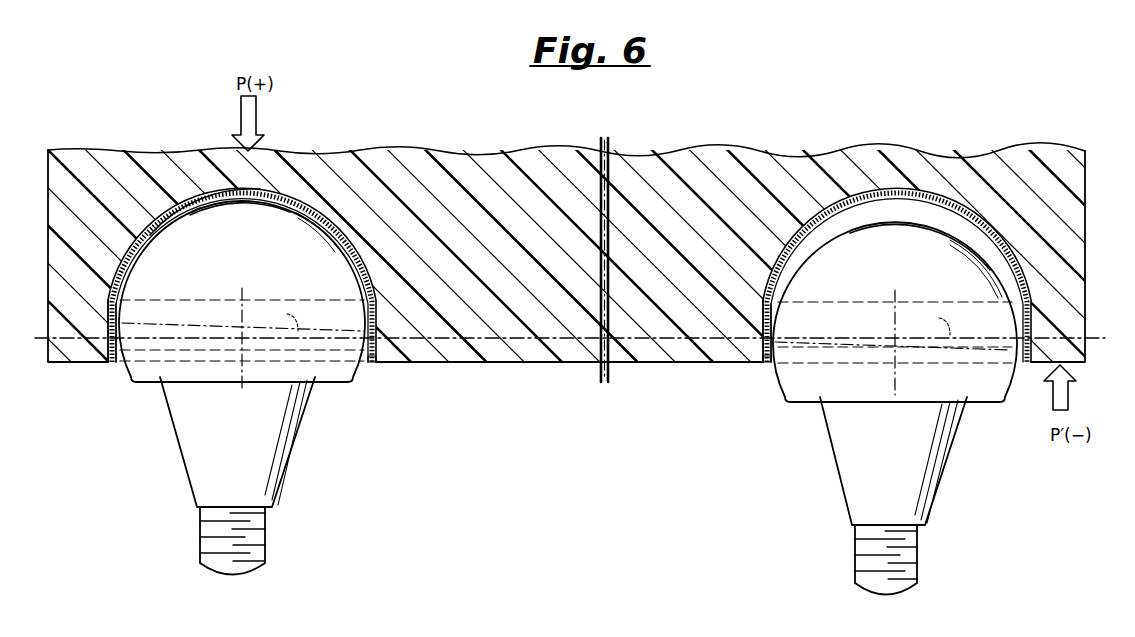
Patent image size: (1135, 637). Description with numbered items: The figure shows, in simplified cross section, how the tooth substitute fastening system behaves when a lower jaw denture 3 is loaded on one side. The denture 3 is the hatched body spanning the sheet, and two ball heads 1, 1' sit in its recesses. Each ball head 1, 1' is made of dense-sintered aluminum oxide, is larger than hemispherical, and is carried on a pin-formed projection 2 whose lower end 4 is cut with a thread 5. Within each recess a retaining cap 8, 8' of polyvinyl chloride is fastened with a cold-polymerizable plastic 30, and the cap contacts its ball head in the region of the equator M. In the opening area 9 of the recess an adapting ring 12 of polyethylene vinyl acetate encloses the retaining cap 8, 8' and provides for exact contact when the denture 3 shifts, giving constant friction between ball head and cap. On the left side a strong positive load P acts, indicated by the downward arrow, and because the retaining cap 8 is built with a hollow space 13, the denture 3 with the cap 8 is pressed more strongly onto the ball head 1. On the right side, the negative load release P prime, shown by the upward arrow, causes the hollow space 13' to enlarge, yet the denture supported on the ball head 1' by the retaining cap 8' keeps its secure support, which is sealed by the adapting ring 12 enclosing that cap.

The ball head 1 is at (242, 311).
The ball head 1' is at (899, 330).
The pin-formed projection 2 is at (294, 418).
The lower jaw denture 3 is at (527, 186).
The lower end 4 is at (207, 534).
The thread 5 is at (266, 534).
The retaining cap 8 is at (205, 173).
The retaining cap 8' is at (965, 246).
The opening area 9 is at (372, 364).
The adapting ring 12 is at (106, 335).
The hollow space 13 is at (240, 228).
The hollow space 13' is at (895, 244).
The plastic 30 is at (299, 190).